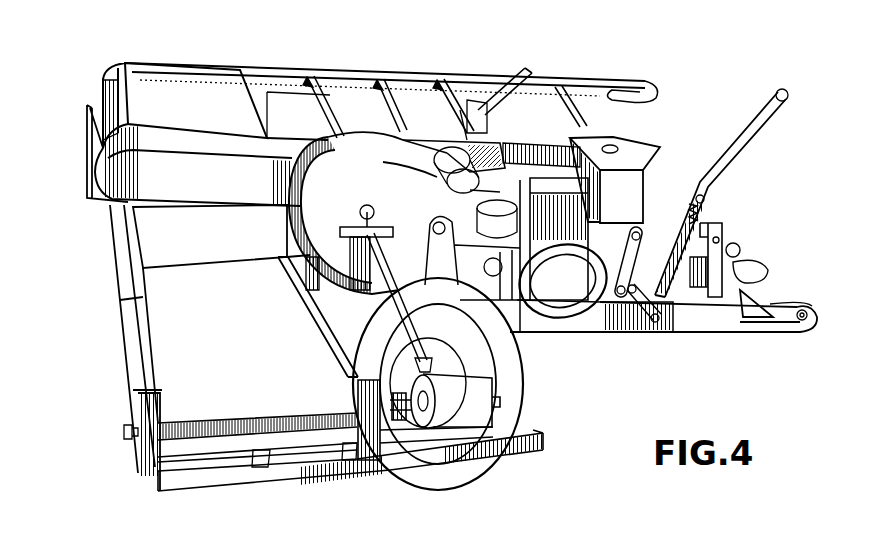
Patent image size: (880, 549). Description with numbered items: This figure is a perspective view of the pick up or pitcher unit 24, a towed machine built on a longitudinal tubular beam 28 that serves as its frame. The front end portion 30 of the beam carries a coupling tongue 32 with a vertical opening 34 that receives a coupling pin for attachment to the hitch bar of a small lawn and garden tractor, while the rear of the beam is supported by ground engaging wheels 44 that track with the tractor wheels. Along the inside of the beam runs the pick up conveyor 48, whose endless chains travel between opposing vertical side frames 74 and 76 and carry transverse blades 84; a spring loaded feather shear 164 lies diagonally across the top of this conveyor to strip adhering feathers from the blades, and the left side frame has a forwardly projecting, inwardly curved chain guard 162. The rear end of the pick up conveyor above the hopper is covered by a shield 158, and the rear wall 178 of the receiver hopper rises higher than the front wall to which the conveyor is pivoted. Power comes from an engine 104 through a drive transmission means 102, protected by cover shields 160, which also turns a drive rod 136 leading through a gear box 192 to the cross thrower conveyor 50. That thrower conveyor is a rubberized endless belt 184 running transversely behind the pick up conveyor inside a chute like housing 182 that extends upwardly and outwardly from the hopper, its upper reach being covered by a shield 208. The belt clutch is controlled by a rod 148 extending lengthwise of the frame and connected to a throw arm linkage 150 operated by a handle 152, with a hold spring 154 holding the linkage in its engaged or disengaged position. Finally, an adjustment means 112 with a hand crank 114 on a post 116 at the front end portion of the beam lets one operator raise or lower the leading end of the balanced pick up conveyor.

The pitcher unit 24 is at (606, 68).
The longitudinal tubular beam 28 is at (685, 334).
The front end portion 30 is at (732, 322).
The coupling tongue 32 is at (790, 322).
The vertical opening 34 is at (812, 305).
The ground engaging wheels 44 is at (520, 369).
The pick up conveyor 48 is at (606, 121).
The cross thrower conveyor 50 is at (122, 432).
The vertical side frame 74 is at (398, 78).
The vertical side frame 76 is at (437, 134).
The blades 84 is at (362, 96).
The drive transmission means 102 is at (368, 222).
The engine 104 is at (564, 222).
The adjustment means 112 is at (742, 248).
The hand crank 114 is at (742, 276).
The post 116 is at (724, 226).
The drive rod 136 is at (332, 318).
The rod 148 is at (585, 335).
The throw arm linkage 150 is at (622, 332).
The handle 152 is at (793, 100).
The hold spring 154 is at (700, 210).
The shield 158 is at (194, 111).
The cover shields 160 is at (330, 182).
The chain guard 162 is at (618, 100).
The feather shear 164 is at (497, 80).
The rear wall 178 is at (87, 190).
The chute like housing 182 is at (126, 338).
The rubberized endless belt 184 is at (228, 437).
The gear box 192 is at (450, 432).
The shield 208 is at (186, 248).